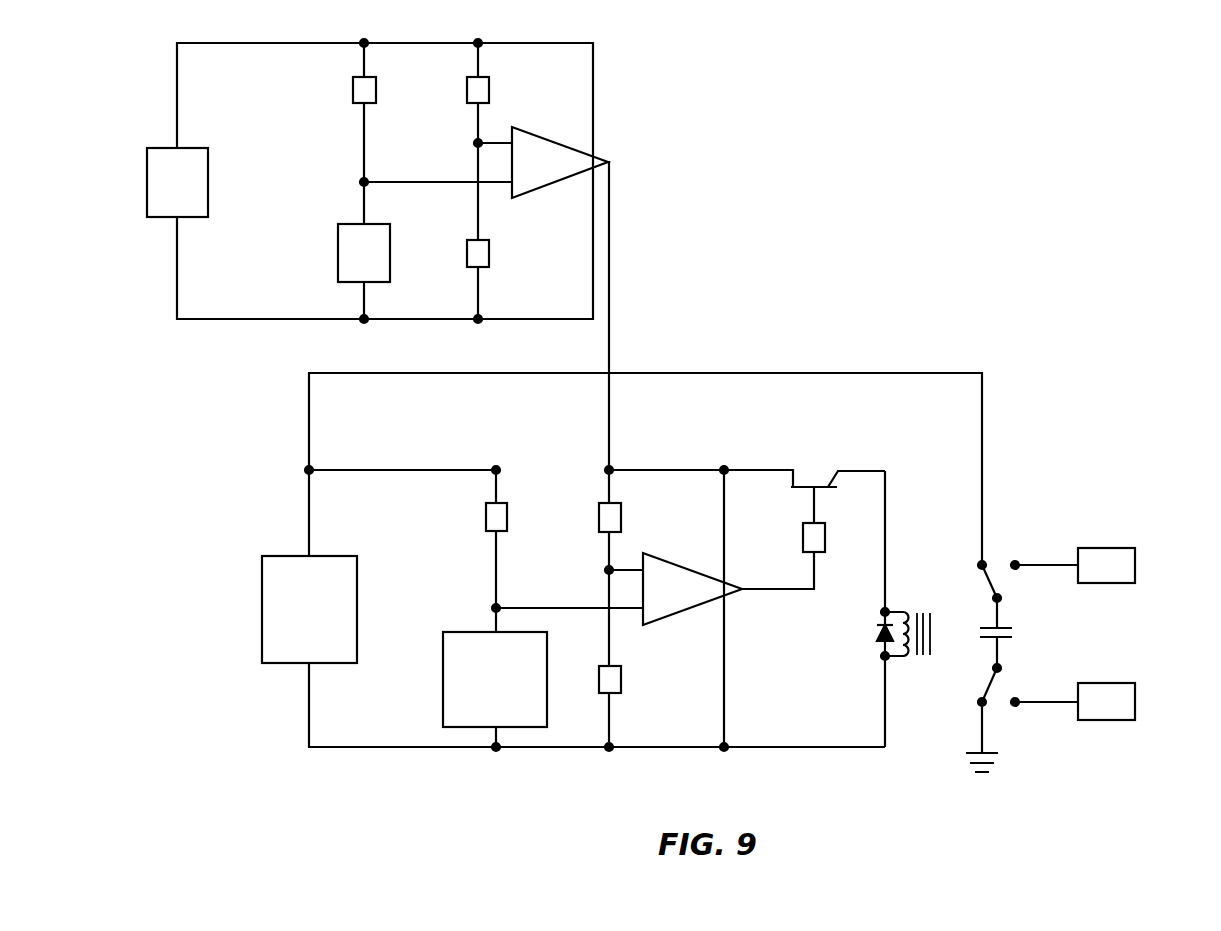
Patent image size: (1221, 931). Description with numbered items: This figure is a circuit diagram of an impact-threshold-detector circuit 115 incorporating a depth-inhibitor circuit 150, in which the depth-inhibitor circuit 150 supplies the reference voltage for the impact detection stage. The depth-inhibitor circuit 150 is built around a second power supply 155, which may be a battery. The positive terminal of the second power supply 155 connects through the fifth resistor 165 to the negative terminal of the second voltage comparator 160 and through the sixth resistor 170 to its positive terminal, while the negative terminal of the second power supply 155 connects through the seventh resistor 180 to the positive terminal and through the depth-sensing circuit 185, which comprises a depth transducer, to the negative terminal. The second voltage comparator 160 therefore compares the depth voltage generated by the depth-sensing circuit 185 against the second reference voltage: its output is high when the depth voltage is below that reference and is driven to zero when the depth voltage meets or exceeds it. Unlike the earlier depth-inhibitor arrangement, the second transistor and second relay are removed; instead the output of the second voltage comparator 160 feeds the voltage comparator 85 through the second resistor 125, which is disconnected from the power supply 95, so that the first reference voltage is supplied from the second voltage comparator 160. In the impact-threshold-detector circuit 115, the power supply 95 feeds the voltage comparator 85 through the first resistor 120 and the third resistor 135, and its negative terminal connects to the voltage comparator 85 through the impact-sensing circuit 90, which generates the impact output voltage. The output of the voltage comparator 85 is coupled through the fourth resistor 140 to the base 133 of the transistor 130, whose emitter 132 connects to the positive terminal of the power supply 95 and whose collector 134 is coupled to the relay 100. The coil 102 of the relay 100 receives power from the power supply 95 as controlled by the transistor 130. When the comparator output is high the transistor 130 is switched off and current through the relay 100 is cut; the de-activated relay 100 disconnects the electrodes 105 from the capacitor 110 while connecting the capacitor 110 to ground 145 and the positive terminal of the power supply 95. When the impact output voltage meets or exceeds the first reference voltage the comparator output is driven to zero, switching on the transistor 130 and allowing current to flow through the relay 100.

The depth-inhibitor circuit 150 is at (635, 58).
The second power supply 155 is at (198, 148).
The fifth resistor 165 is at (353, 90).
The sixth resistor 170 is at (467, 90).
The seventh resistor 180 is at (467, 253).
The depth-sensing circuit 185 is at (340, 224).
The second voltage comparator 160 is at (547, 188).
The impact-threshold-detector circuit 115 is at (957, 320).
The power supply 95 is at (335, 556).
The impact-sensing circuit 90 is at (452, 631).
The first resistor 120 is at (486, 517).
The second resistor 125 is at (600, 517).
The third resistor 135 is at (622, 690).
The voltage comparator 85 is at (680, 613).
The fourth resistor 140 is at (803, 537).
The transistor 130 is at (820, 437).
The emitter 132 is at (797, 484).
The base 133 is at (835, 490).
The collector 134 is at (830, 468).
The coil 102 is at (903, 657).
The relay 100 is at (892, 603).
The capacitor 110 is at (1003, 628).
The electrodes 105 is at (1120, 548).
The ground 145 is at (975, 752).